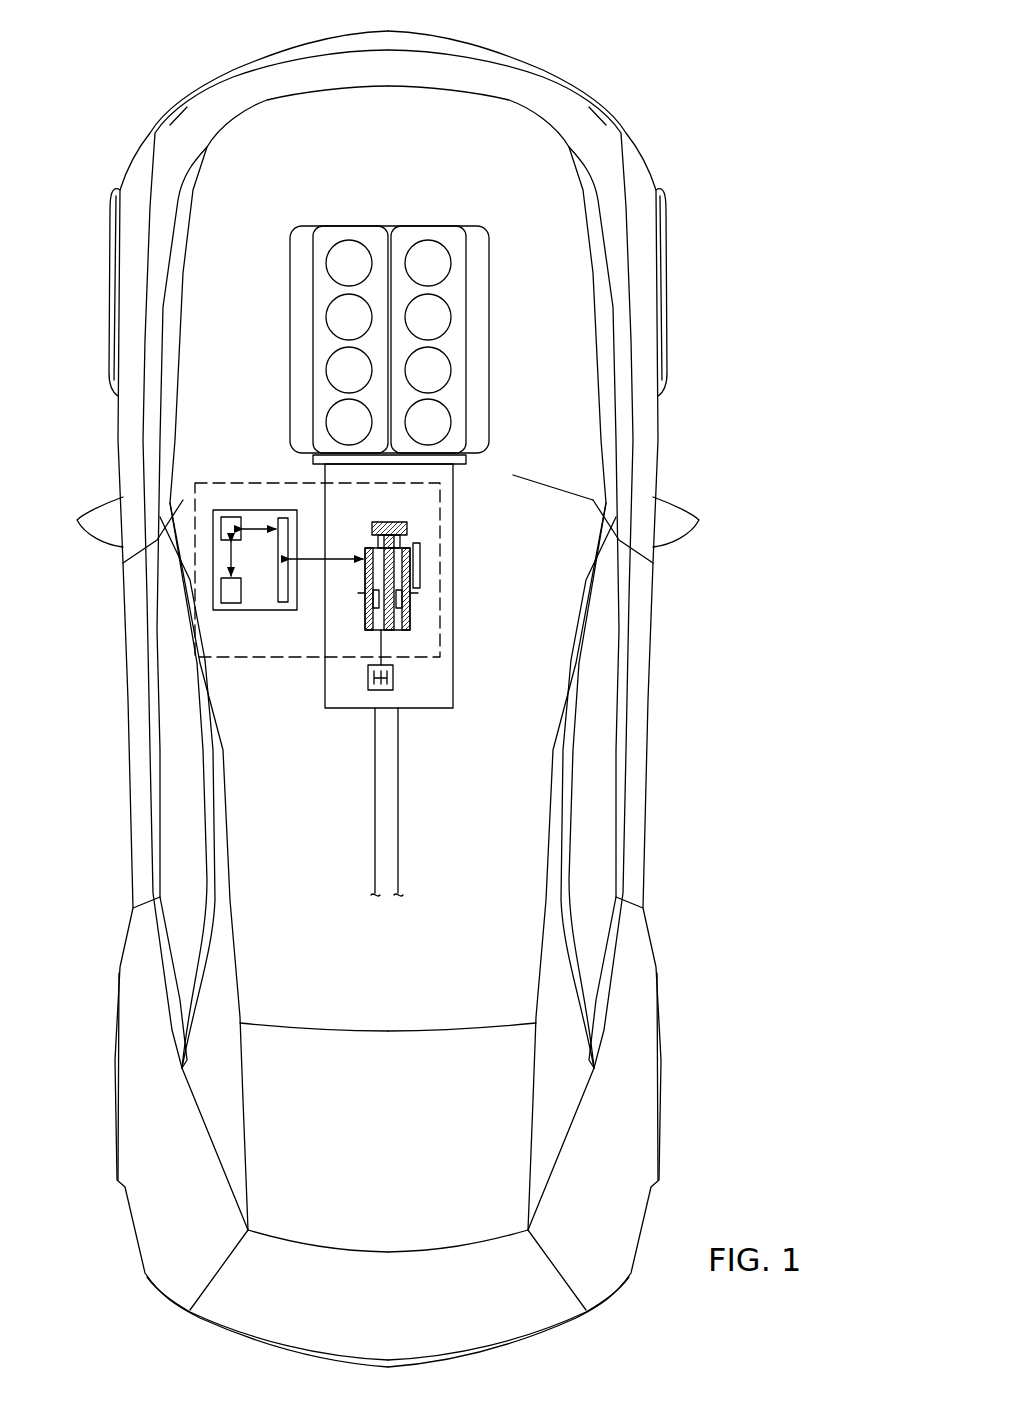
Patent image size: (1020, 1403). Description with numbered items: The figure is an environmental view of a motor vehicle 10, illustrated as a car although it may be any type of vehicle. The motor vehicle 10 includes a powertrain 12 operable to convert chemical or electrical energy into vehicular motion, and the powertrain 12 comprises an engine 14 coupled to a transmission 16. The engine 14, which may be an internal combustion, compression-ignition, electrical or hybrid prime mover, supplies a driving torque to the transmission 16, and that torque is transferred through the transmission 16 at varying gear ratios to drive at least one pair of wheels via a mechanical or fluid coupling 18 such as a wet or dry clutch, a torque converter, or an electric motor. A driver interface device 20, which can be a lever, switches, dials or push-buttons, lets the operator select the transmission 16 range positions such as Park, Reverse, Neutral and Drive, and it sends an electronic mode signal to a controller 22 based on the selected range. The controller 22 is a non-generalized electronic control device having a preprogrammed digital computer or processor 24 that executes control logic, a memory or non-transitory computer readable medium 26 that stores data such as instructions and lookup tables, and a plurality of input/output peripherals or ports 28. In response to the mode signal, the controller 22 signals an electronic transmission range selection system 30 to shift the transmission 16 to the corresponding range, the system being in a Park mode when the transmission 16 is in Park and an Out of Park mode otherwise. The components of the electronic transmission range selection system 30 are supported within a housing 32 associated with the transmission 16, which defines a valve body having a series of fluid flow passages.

The motor vehicle 10 is at (657, 58).
The powertrain 12 is at (465, 196).
The engine 14 is at (489, 328).
The transmission 16 is at (453, 545).
The mechanical or fluid coupling 18 is at (466, 459).
The driver interface device 20 is at (369, 683).
The controller 22 is at (262, 610).
The processor 24 is at (233, 517).
The memory 26 is at (227, 595).
The input/output peripherals or ports 28 is at (285, 523).
The electronic transmission range selection system 30 is at (420, 658).
The housing 32 is at (418, 614).